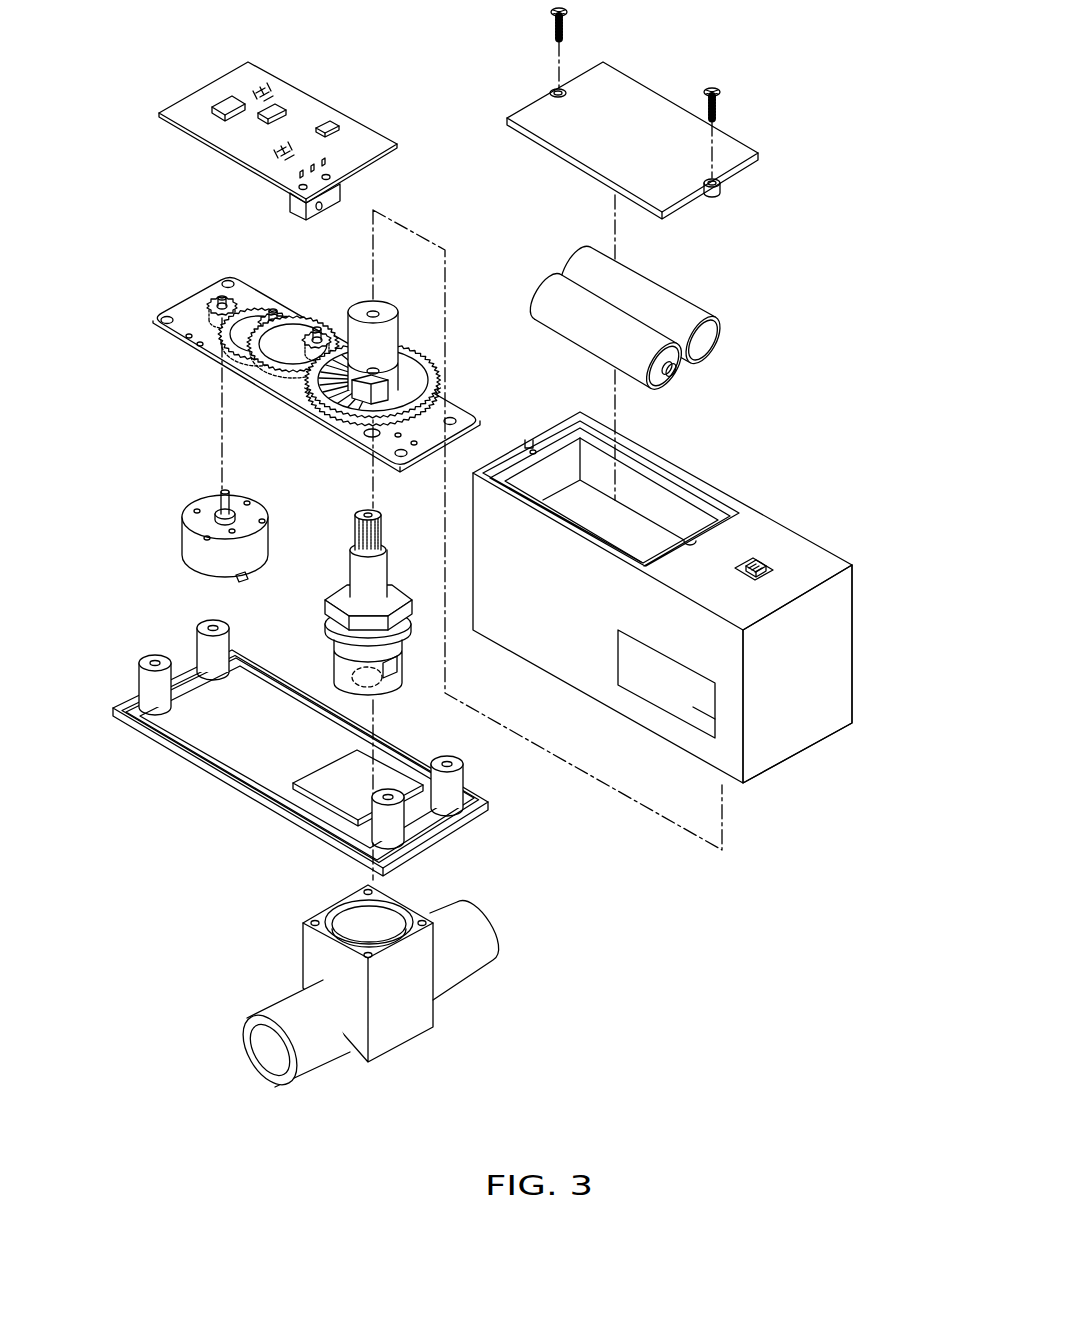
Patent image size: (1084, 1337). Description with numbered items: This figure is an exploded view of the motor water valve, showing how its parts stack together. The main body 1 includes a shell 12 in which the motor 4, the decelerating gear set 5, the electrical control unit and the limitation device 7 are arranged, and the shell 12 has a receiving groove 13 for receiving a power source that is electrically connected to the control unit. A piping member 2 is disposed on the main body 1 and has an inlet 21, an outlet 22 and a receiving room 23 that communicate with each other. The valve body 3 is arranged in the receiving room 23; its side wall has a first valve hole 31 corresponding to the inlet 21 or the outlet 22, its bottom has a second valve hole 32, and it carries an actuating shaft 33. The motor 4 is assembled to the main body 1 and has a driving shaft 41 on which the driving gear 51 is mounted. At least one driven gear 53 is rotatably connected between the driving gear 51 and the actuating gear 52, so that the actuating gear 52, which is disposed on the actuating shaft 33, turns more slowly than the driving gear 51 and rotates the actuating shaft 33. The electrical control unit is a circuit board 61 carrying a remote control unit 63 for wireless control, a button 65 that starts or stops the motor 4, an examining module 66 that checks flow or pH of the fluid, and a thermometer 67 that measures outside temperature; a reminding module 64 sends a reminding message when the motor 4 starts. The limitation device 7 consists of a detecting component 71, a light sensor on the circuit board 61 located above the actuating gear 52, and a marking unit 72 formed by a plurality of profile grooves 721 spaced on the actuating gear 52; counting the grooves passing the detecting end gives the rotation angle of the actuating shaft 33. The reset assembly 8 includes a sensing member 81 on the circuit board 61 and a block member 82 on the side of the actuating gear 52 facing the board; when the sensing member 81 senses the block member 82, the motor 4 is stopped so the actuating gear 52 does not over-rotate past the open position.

The main body 1 is at (665, 614).
The shell 12 is at (817, 610).
The receiving groove 13 is at (635, 488).
The piping member 2 is at (386, 983).
The inlet 21 is at (267, 1053).
The outlet 22 is at (492, 927).
The receiving room 23 is at (347, 925).
The valve body 3 is at (373, 621).
The first valve hole 31 is at (397, 662).
The second valve hole 32 is at (380, 682).
The actuating shaft 33 is at (385, 533).
The motor 4 is at (191, 518).
The driving shaft 41 is at (214, 505).
The decelerating gear set 5 is at (293, 373).
The driving gear 51 is at (210, 302).
The actuating gear 52 is at (412, 363).
The driven gear 53 is at (287, 358).
The circuit board 61 is at (275, 120).
The remote control unit 63 is at (227, 112).
The reminding module 64 is at (713, 718).
The button 65 is at (762, 586).
The examining module 66 is at (277, 112).
The thermometer 67 is at (333, 127).
The limitation device 7 is at (351, 312).
The detecting component 71 is at (300, 203).
The marking unit 72 is at (368, 344).
The profile grooves 721 is at (313, 402).
The reset assembly 8 is at (404, 281).
The sensing member 81 is at (324, 206).
The block member 82 is at (377, 395).